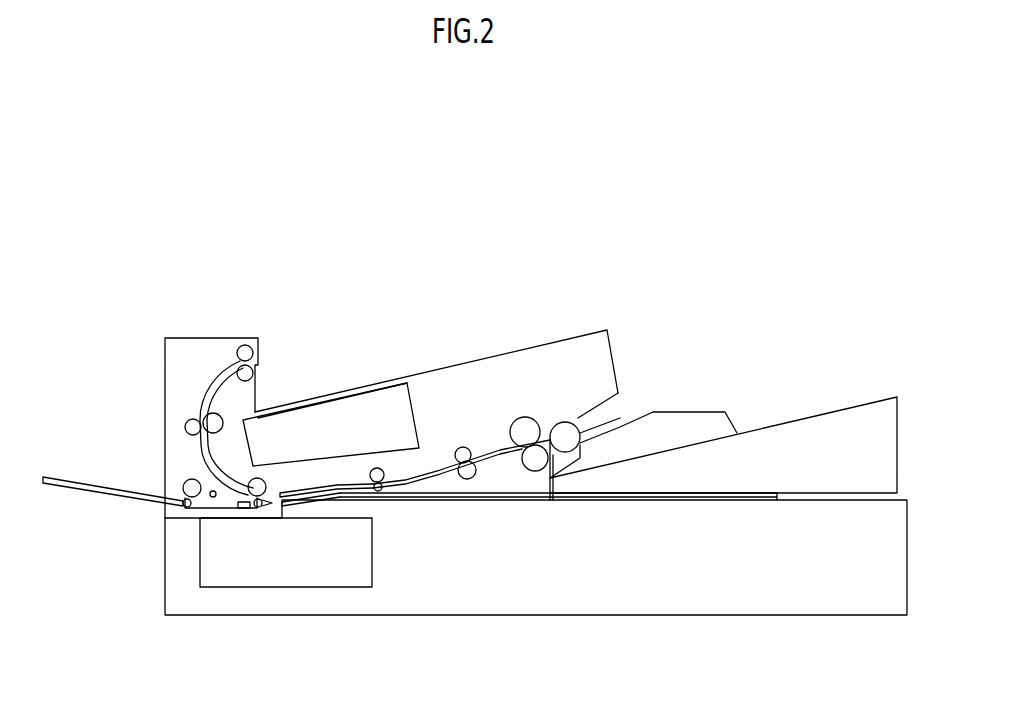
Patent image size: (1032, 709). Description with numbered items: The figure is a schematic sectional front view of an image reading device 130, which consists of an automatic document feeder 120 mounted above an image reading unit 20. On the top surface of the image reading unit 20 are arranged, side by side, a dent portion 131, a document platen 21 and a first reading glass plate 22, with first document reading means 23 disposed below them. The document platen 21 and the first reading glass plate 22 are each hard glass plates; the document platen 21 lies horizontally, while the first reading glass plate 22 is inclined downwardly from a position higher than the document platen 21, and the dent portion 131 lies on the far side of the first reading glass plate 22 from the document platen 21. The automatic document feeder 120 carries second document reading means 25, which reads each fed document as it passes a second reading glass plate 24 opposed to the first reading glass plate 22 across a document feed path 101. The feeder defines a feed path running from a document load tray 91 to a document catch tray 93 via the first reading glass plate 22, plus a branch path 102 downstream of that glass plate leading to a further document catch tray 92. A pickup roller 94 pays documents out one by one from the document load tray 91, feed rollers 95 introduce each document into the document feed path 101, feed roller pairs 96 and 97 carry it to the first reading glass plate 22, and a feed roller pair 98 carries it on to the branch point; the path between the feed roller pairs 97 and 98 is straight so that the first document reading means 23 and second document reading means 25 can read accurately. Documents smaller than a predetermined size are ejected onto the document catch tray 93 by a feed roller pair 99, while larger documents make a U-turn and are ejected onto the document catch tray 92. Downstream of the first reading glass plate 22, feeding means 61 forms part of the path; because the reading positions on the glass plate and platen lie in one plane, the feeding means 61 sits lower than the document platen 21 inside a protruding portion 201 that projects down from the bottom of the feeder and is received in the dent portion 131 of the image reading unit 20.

The image reading unit 20 is at (737, 598).
The document platen 21 is at (632, 503).
The first reading glass plate 22 is at (312, 503).
The first document reading means 23 is at (354, 553).
The second reading glass plate 24 is at (310, 492).
The second document reading means 25 is at (377, 403).
The feeding means 61 is at (252, 504).
The document load tray 91 is at (672, 448).
The document catch tray 92 is at (342, 392).
The document catch tray 93 is at (106, 498).
The pickup roller 94 is at (567, 422).
The feed rollers 95 is at (537, 472).
The feed roller pair 96 is at (477, 480).
The feed roller pair 97 is at (385, 494).
The feed roller pair 98 is at (183, 482).
The feed roller pair 99 is at (182, 496).
The document feed path 101 is at (445, 481).
The branch path 102 is at (200, 405).
The automatic document feeder 120 is at (775, 356).
The image reading device 130 is at (672, 241).
The dent portion 131 is at (235, 500).
The protruding portion 201 is at (200, 509).